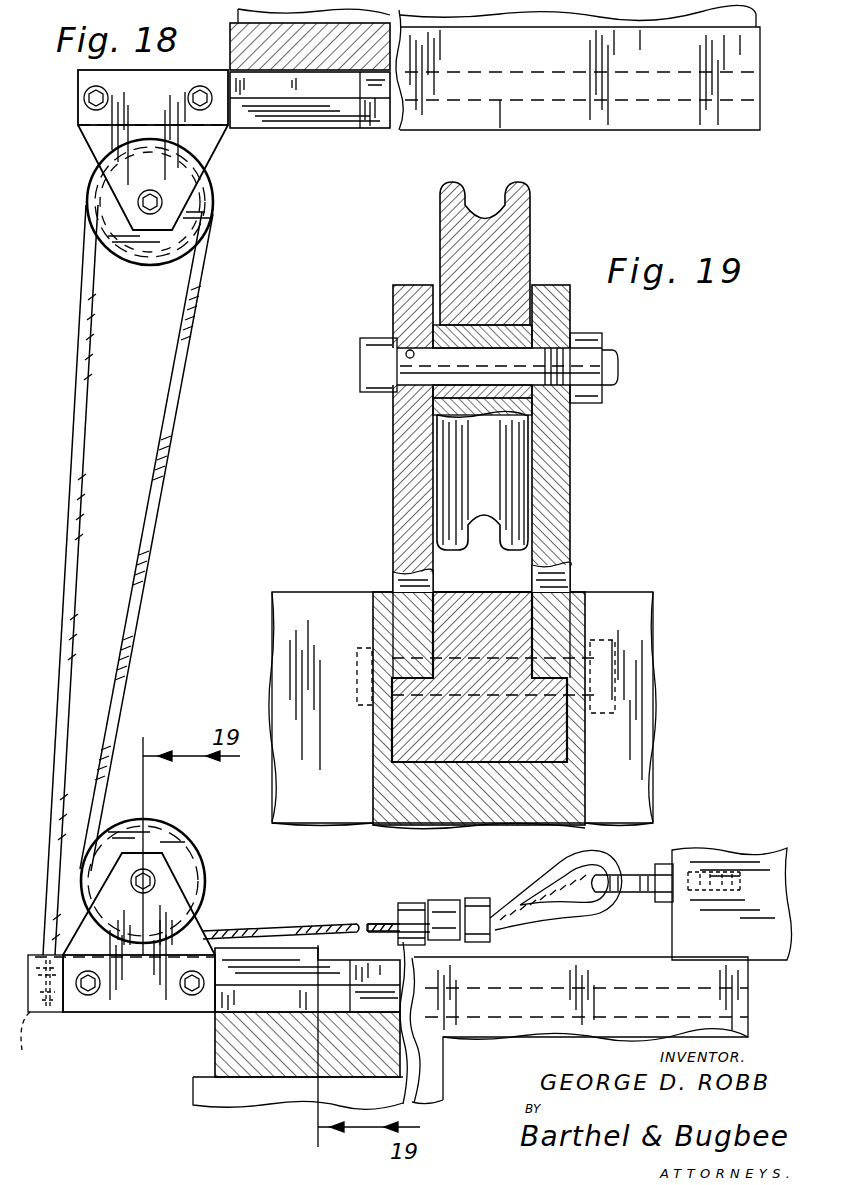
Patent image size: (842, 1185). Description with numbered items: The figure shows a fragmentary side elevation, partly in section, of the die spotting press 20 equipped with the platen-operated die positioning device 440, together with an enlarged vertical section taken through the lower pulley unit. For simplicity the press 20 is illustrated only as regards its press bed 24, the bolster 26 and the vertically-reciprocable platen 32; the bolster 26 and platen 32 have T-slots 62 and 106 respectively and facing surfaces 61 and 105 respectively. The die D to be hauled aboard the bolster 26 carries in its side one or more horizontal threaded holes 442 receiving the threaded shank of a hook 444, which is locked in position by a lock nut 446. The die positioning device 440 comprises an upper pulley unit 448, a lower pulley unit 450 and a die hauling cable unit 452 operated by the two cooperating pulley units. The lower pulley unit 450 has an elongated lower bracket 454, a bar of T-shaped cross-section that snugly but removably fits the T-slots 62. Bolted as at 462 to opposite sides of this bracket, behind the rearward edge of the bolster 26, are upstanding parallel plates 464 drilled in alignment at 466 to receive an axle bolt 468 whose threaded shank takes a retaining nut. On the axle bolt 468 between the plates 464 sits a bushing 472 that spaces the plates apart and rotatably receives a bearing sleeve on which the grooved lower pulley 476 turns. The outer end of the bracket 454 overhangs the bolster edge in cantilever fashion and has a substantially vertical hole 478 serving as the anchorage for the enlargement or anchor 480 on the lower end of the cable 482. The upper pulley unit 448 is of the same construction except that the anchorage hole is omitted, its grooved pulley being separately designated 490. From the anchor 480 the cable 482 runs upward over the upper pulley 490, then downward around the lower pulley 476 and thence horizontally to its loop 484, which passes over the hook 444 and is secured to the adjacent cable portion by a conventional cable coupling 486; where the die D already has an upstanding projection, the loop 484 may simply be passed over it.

In FIG. 18, the upper pulley unit 448 is at (94, 166).
In FIG. 18, the grooved pulley 490 is at (152, 258).
In FIG. 18, the die hauling cable unit 452 is at (175, 468).
In FIG. 18, the cable 482 is at (134, 598).
In FIG. 18, the die positioning device 440 is at (242, 295).
In FIG. 18, the lower bracket 454 is at (260, 120).
In FIG. 18, the T-slot 106 is at (376, 88).
In FIG. 18, the die spotting press 20 is at (688, 141).
In FIG. 18, the facing surface 105 is at (550, 132).
In FIG. 18, the platen 32 is at (628, 138).
In FIG. 18, the lower pulley 476 is at (174, 836).
In FIG. 19, the lower pulley 476 is at (510, 234).
In FIG. 18, the plates 464 is at (168, 886).
In FIG. 19, the plates 464 is at (398, 478).
In FIG. 18, the bolts 462 is at (95, 993).
In FIG. 18, the anchor 480 is at (52, 1014).
In FIG. 18, the hole 478 is at (41, 1039).
In FIG. 18, the lower pulley unit 450 is at (195, 1020).
In FIG. 18, the T-slot 62 is at (394, 995).
In FIG. 19, the T-slot 62 is at (568, 740).
In FIG. 18, the bolster 26 is at (202, 1057).
In FIG. 18, the press bed 24 is at (200, 1095).
In FIG. 18, the cable coupling 486 is at (444, 885).
In FIG. 18, the loop 484 is at (548, 918).
In FIG. 18, the lock nut 446 is at (663, 868).
In FIG. 18, the hook 444 is at (640, 870).
In FIG. 18, the threaded hole 442 is at (700, 848).
In FIG. 18, the die D is at (740, 843).
In FIG. 18, the facing surface 61 is at (648, 946).
In FIG. 19, the axle bolt 468 is at (375, 357).
In FIG. 19, the aligned holes 466 is at (408, 350).
In FIG. 19, the bushing 472 is at (452, 392).